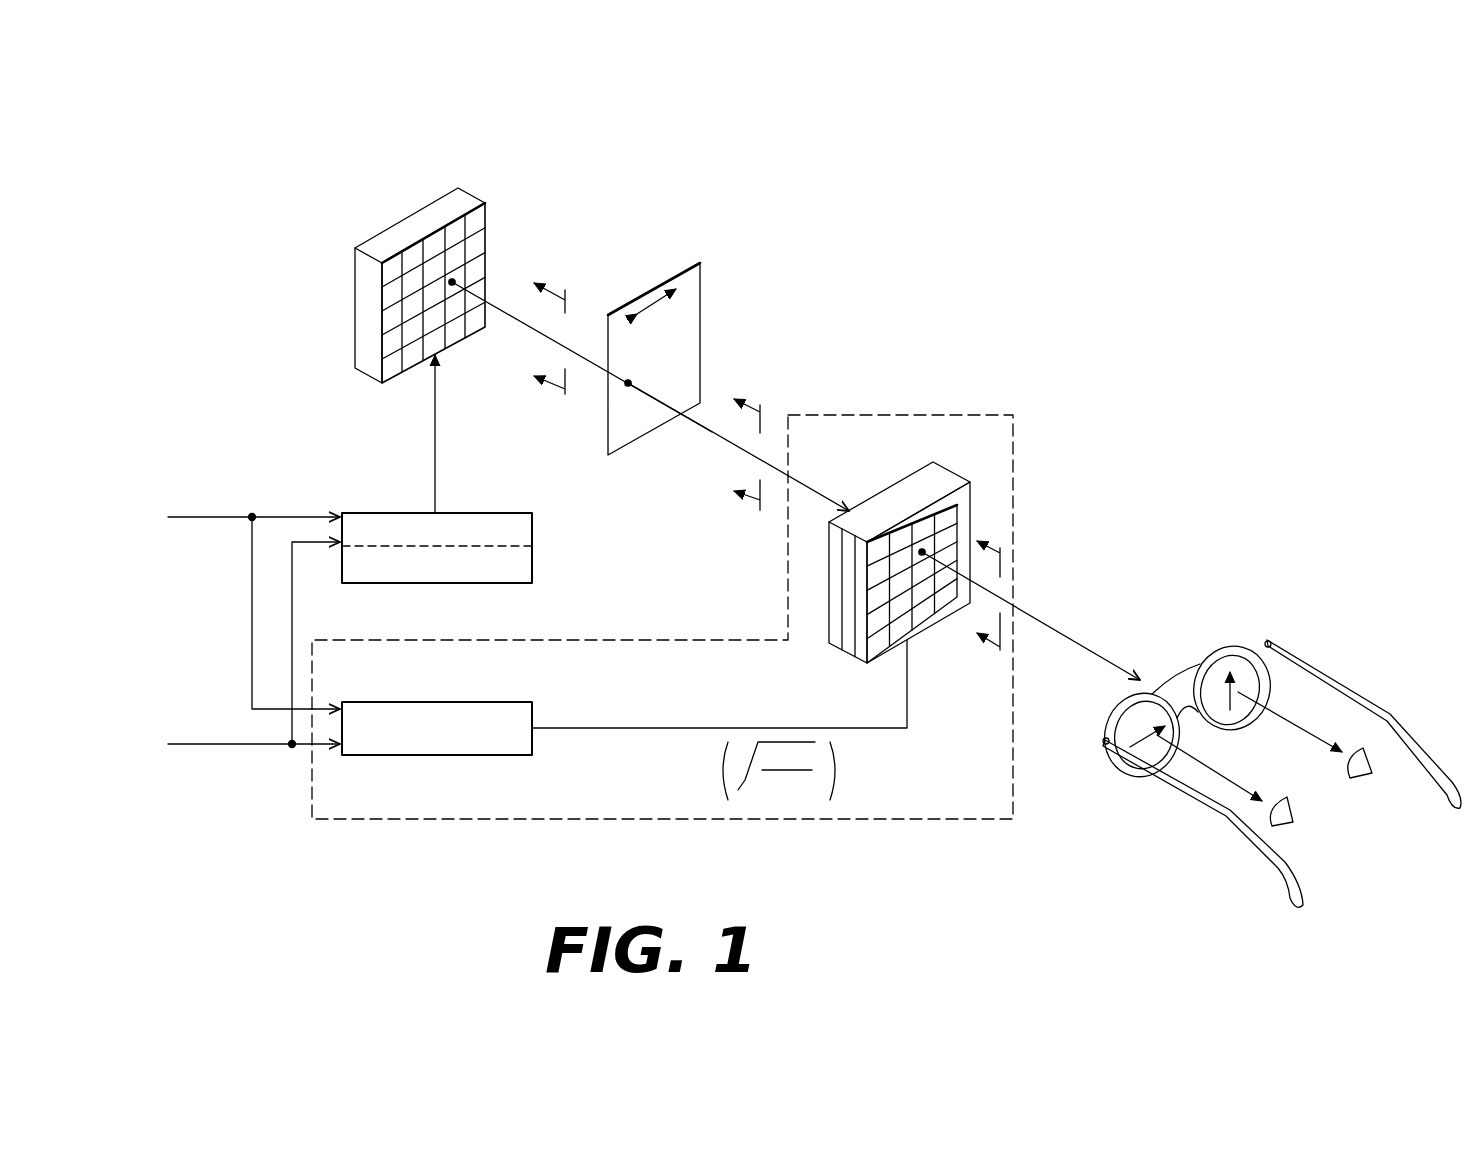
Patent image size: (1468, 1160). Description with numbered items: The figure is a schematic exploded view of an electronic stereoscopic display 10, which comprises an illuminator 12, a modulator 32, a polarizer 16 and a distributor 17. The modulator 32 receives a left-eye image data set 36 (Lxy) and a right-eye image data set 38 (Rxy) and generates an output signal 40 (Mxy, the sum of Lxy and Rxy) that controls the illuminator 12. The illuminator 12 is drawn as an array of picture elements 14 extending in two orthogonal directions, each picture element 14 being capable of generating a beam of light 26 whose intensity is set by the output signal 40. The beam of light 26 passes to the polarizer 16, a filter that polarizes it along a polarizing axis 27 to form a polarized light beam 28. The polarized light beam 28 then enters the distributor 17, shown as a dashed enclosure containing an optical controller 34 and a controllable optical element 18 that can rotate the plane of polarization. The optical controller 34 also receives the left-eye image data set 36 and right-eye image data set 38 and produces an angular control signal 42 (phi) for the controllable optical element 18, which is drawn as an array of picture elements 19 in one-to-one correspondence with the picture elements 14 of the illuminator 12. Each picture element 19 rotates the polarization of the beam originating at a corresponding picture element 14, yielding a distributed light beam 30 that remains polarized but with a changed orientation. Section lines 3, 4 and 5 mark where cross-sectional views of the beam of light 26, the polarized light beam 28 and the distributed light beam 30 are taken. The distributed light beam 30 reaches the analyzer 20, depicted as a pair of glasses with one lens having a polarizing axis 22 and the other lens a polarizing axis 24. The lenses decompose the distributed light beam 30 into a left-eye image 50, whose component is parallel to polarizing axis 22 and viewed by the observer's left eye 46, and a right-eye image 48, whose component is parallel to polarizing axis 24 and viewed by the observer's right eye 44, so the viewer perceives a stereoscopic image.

The section line 3- 3 is at (537, 333).
The section line 4- 4 is at (735, 448).
The section line 5- 5 is at (985, 583).
The electronic stereoscopic display 10 is at (770, 222).
The illuminator 12 is at (420, 217).
The picture element 14 is at (452, 282).
The polarizer 16 is at (700, 264).
The distributor 17 is at (898, 414).
The controllable optical element 18 is at (965, 482).
The picture element 19 is at (922, 552).
The analyzer 20 is at (1278, 755).
The polarizing axis 22 is at (1175, 737).
The polarizing axis 24 is at (1240, 708).
The beam of light 26 is at (549, 340).
The polarizing axis 27 is at (655, 298).
The polarized light beam 28 is at (720, 437).
The distributed light beam 30 is at (1042, 622).
The modulator 32 is at (432, 529).
The optical controller 34 is at (433, 711).
The left-eye image data set 36 is at (202, 520).
The right-eye image data set 38 is at (208, 746).
The output signal 40 is at (435, 400).
The angular control signal 42 is at (667, 727).
The right eye 44 is at (1352, 777).
The left eye 46 is at (1295, 822).
The right-eye image 48 is at (1307, 704).
The left-eye image 50 is at (1223, 778).